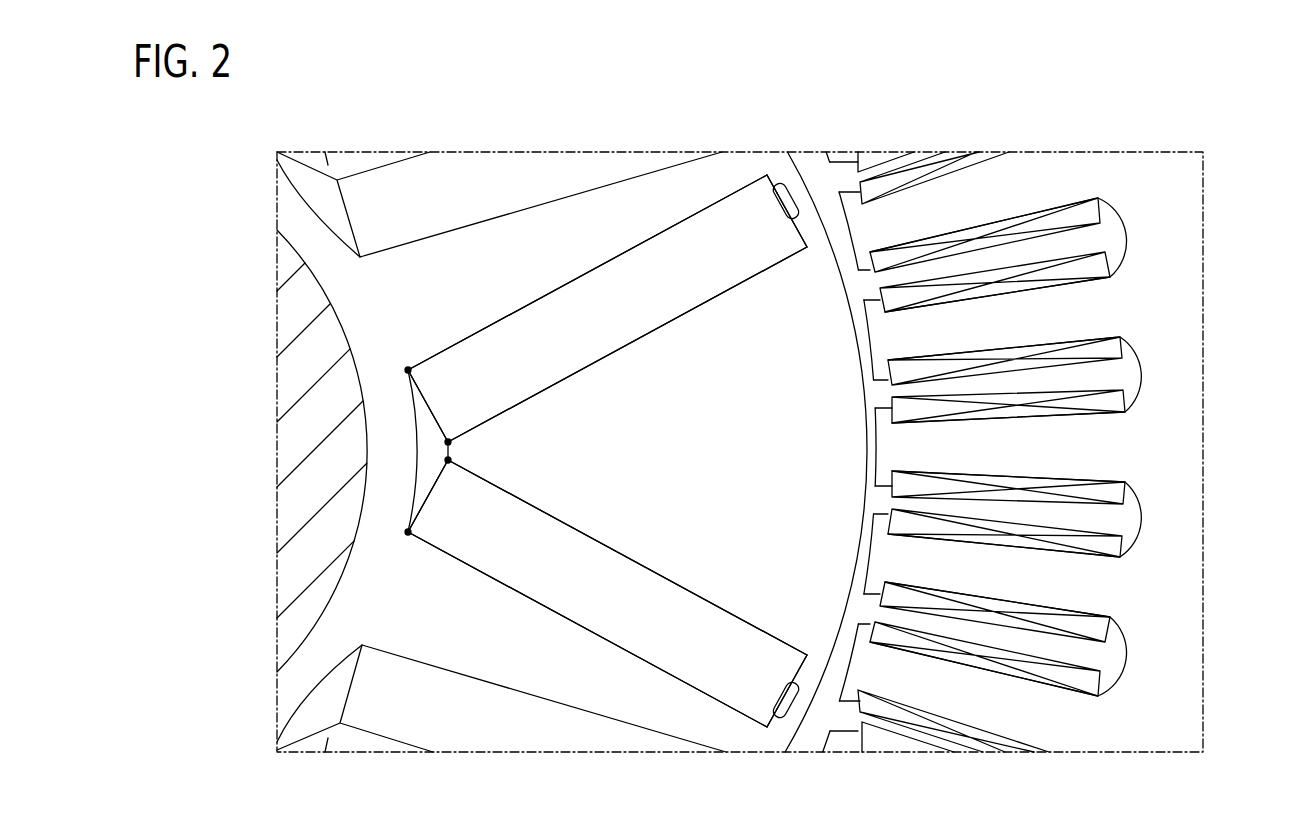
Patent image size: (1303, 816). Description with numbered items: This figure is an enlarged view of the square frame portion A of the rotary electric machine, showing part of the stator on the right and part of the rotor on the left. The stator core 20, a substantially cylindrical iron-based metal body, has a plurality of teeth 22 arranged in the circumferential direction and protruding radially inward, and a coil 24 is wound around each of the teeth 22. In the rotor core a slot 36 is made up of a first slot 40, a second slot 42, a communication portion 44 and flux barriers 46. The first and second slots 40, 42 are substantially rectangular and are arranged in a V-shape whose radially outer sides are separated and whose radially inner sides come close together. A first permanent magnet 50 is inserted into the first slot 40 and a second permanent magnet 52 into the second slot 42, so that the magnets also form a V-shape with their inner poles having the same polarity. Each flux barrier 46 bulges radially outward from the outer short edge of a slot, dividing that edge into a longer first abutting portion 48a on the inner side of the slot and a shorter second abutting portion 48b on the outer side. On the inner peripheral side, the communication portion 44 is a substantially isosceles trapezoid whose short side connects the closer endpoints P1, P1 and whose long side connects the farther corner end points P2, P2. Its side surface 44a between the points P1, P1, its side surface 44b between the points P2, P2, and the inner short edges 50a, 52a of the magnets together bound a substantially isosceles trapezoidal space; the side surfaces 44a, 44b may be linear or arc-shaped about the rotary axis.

The stator core 20 is at (1030, 452).
The teeth 22 is at (912, 333).
The coil 24 is at (885, 298).
The slot 36 is at (734, 406).
The first slot 40 is at (610, 425).
The second slot 42 is at (607, 593).
The communication portion 44 is at (409, 454).
The side surface 44a is at (436, 440).
The side surface 44b is at (421, 476).
The flux barrier 46 is at (787, 697).
The first abutting portion 48a is at (797, 672).
The second abutting portion 48b is at (750, 714).
The first permanent magnet 50 is at (565, 300).
The short edge 50a is at (430, 412).
The second permanent magnet 52 is at (565, 600).
The short edge 52a is at (425, 493).
The endpoint P1 is at (452, 459).
The corner end point P2 is at (411, 536).
The square frame portion A is at (1203, 212).